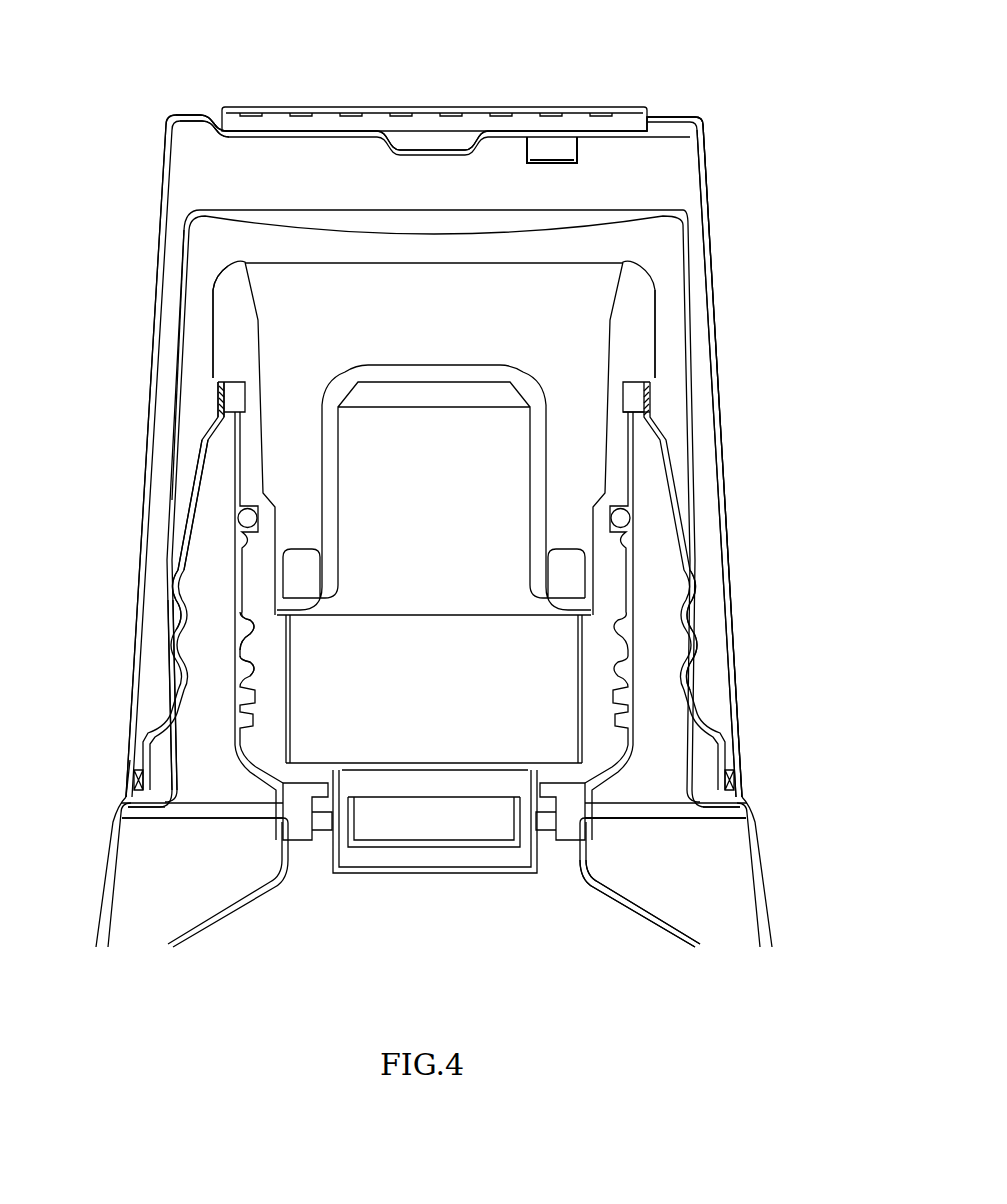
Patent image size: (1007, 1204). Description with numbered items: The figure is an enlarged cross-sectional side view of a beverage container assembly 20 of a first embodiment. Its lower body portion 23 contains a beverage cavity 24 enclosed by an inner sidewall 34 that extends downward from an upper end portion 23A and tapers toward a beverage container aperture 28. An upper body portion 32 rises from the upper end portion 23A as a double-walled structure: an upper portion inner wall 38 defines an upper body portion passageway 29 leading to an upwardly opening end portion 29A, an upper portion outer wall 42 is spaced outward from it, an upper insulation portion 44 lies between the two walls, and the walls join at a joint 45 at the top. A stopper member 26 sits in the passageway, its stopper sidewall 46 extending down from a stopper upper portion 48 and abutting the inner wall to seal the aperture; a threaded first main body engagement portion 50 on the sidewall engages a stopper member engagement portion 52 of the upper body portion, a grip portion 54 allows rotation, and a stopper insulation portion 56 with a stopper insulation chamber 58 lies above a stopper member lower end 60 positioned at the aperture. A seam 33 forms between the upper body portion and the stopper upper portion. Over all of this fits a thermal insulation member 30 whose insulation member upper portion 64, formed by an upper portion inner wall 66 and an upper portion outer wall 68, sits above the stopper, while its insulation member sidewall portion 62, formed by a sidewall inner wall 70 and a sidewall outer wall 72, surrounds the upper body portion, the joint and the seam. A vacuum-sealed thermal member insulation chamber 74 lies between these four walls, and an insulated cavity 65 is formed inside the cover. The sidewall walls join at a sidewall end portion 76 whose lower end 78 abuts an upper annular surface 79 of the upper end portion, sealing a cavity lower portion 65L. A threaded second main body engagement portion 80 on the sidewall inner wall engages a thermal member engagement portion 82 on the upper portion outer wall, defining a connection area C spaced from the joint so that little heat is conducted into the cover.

The beverage container assembly 20 is at (148, 57).
The lower body portion 23 is at (768, 905).
The upper end portion 23A is at (745, 802).
The beverage cavity 24 is at (387, 922).
The stopper member 26 is at (647, 272).
The beverage container aperture 28 is at (587, 862).
The upper body portion passageway 29 is at (623, 550).
The upwardly opening end portion 29A is at (636, 400).
The thermal insulation member 30 is at (703, 118).
The upper body portion 32 is at (199, 468).
The seam 33 is at (668, 381).
The inner sidewall 34 is at (647, 907).
The upper portion inner wall 38 is at (233, 693).
The upper portion outer wall 42 is at (190, 513).
The upper insulation portion 44 is at (185, 570).
The joint 45 is at (218, 396).
The stopper sidewall 46 is at (244, 440).
The stopper upper portion 48 is at (195, 328).
The first main body engagement portion 50 is at (235, 620).
The stopper member engagement portion 52 is at (212, 595).
The grip portion 54 is at (210, 298).
The stopper insulation portion 56 is at (560, 365).
The stopper insulation chamber 58 is at (441, 651).
The stopper member lower end 60 is at (488, 873).
The insulation member sidewall portion 62 is at (728, 530).
The insulation member upper portion 64 is at (672, 112).
The insulated cavity 65 is at (648, 241).
The cavity lower portion 65L is at (165, 750).
The upper portion inner wall 66 is at (215, 208).
The upper portion outer wall 68 is at (273, 128).
The sidewall inner wall 70 is at (700, 443).
The sidewall outer wall 72 is at (720, 420).
The thermal member insulation chamber 74 is at (657, 172).
The sidewall end portion 76 is at (128, 783).
The lower end 78 is at (130, 795).
The upper annular surface 79 is at (150, 790).
The second main body engagement portion 80 is at (700, 634).
The thermal member engagement portion 82 is at (692, 657).
The connection area C is at (236, 648).